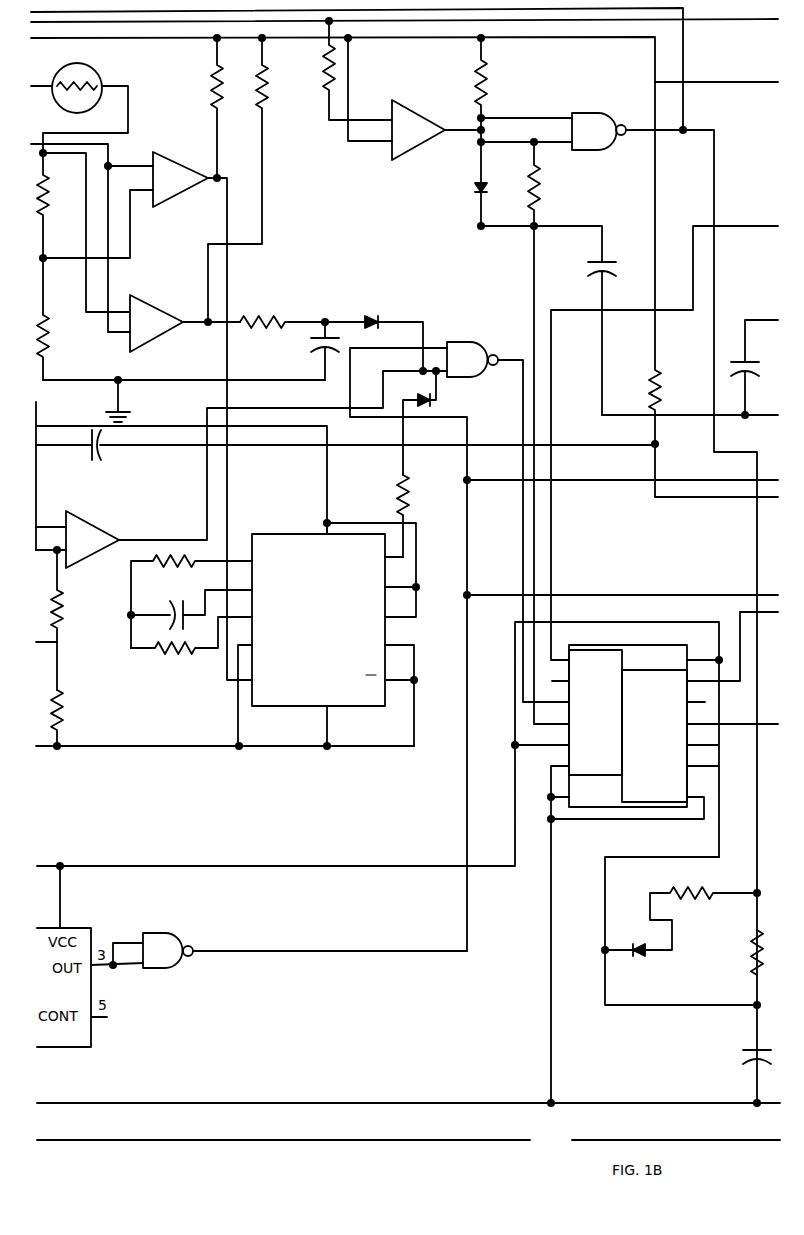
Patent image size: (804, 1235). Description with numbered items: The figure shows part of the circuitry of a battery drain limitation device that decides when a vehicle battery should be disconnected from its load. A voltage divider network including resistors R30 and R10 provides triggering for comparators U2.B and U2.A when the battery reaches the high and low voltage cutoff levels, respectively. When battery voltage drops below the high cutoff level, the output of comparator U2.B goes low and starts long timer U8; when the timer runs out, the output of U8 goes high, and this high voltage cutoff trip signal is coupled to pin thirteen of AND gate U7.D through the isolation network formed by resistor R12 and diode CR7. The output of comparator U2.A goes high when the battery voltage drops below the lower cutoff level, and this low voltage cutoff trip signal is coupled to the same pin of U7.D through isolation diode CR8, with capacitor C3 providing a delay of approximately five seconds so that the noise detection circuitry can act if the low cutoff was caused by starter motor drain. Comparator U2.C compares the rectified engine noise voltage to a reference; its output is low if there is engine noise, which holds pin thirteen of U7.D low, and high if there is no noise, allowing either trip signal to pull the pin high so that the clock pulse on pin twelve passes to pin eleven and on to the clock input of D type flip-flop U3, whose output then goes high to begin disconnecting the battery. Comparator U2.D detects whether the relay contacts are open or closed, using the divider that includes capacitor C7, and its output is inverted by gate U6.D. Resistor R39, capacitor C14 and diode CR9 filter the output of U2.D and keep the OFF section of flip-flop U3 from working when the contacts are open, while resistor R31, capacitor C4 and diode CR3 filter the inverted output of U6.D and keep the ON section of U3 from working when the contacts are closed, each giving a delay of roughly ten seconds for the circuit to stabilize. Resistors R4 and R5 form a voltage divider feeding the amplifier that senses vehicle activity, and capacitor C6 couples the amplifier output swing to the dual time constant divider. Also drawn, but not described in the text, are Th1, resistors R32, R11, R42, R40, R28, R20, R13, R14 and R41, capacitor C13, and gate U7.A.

The thermistor Th1 is at (86, 81).
The resistor R30 is at (57, 205).
The resistor R10 is at (60, 319).
The resistor R32 is at (200, 108).
The resistor R11 is at (254, 180).
The resistor R42 is at (342, 70).
The comparator U2.B is at (177, 169).
The comparator U2.A is at (157, 314).
The resistor R40 is at (282, 332).
The capacitor C3 is at (321, 350).
The isolation diode CR8 is at (374, 332).
The comparator U2.D is at (418, 121).
The resistor R28 is at (498, 78).
The diode CR9 is at (463, 184).
The resistor R39 is at (550, 184).
The capacitor C14 is at (587, 329).
The gate U6.D is at (599, 120).
The capacitor C7 is at (755, 367).
The resistor R20 is at (699, 289).
The AND gate U7.D is at (473, 348).
The diode CR7 is at (437, 423).
The resistor R12 is at (385, 516).
The capacitor C6 is at (345, 449).
The comparator U2.C is at (97, 530).
The resistor R4 is at (71, 620).
The resistor R5 is at (71, 718).
The resistor R13 is at (191, 594).
The capacitor C13 is at (191, 608).
The resistor R14 is at (191, 648).
The long timer U8 is at (327, 612).
The D type flip-flop U3 is at (407, 857).
The resistor R41 is at (701, 909).
The diode CR3 is at (626, 962).
The resistor R31 is at (740, 952).
The capacitor C4 is at (747, 1055).
The NAND gate U7.A is at (172, 940).